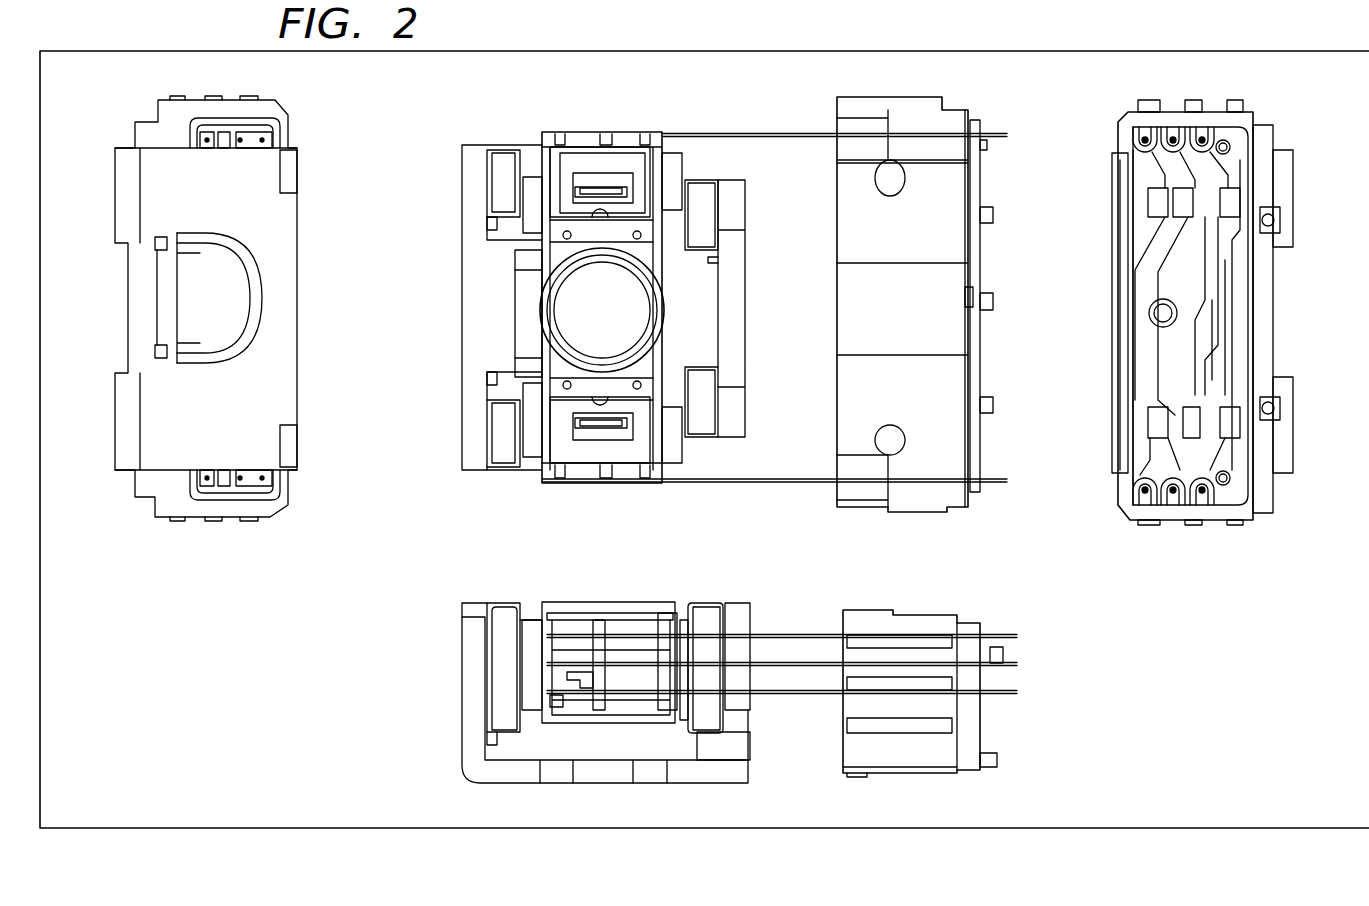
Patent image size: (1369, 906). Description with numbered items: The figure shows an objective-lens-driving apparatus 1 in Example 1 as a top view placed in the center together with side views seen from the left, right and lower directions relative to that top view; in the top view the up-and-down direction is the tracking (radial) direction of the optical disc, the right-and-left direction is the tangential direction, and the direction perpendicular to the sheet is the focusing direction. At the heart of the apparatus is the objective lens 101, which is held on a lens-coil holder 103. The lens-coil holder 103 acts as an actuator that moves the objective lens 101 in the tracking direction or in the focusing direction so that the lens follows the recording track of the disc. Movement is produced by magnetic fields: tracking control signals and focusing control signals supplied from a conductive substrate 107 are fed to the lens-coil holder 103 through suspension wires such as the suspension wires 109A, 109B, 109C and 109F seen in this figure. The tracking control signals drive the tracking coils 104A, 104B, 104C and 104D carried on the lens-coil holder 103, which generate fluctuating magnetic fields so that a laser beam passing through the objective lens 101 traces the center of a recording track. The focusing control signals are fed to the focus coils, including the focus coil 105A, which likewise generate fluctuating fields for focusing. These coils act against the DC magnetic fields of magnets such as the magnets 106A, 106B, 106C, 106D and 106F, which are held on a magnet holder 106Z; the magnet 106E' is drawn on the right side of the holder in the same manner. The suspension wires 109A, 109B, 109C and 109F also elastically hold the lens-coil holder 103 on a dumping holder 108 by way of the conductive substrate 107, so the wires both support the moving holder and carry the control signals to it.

The objective-lens-driving apparatus 1 is at (470, 88).
The objective lens 101 is at (622, 312).
The lens-coil holder 103 is at (553, 250).
The tracking coil 104A is at (537, 190).
The tracking coil 104B is at (533, 417).
The tracking coil 104C is at (668, 450).
The tracking coil 104D is at (668, 172).
The focus coil 105A is at (648, 672).
The magnet 106A is at (503, 178).
The magnet 106B is at (497, 435).
The magnet 106C is at (602, 425).
The magnet 106D is at (702, 415).
The coil 106E' is at (712, 173).
The magnet 106F is at (603, 192).
The magnet holder 106Z is at (155, 418).
The conductive substrate 107 is at (973, 273).
The dumping holder 108 is at (172, 112).
The suspension wire 109A is at (792, 482).
The suspension wire 109B is at (768, 670).
The suspension wire 109C is at (808, 697).
The suspension wire 109F is at (790, 135).